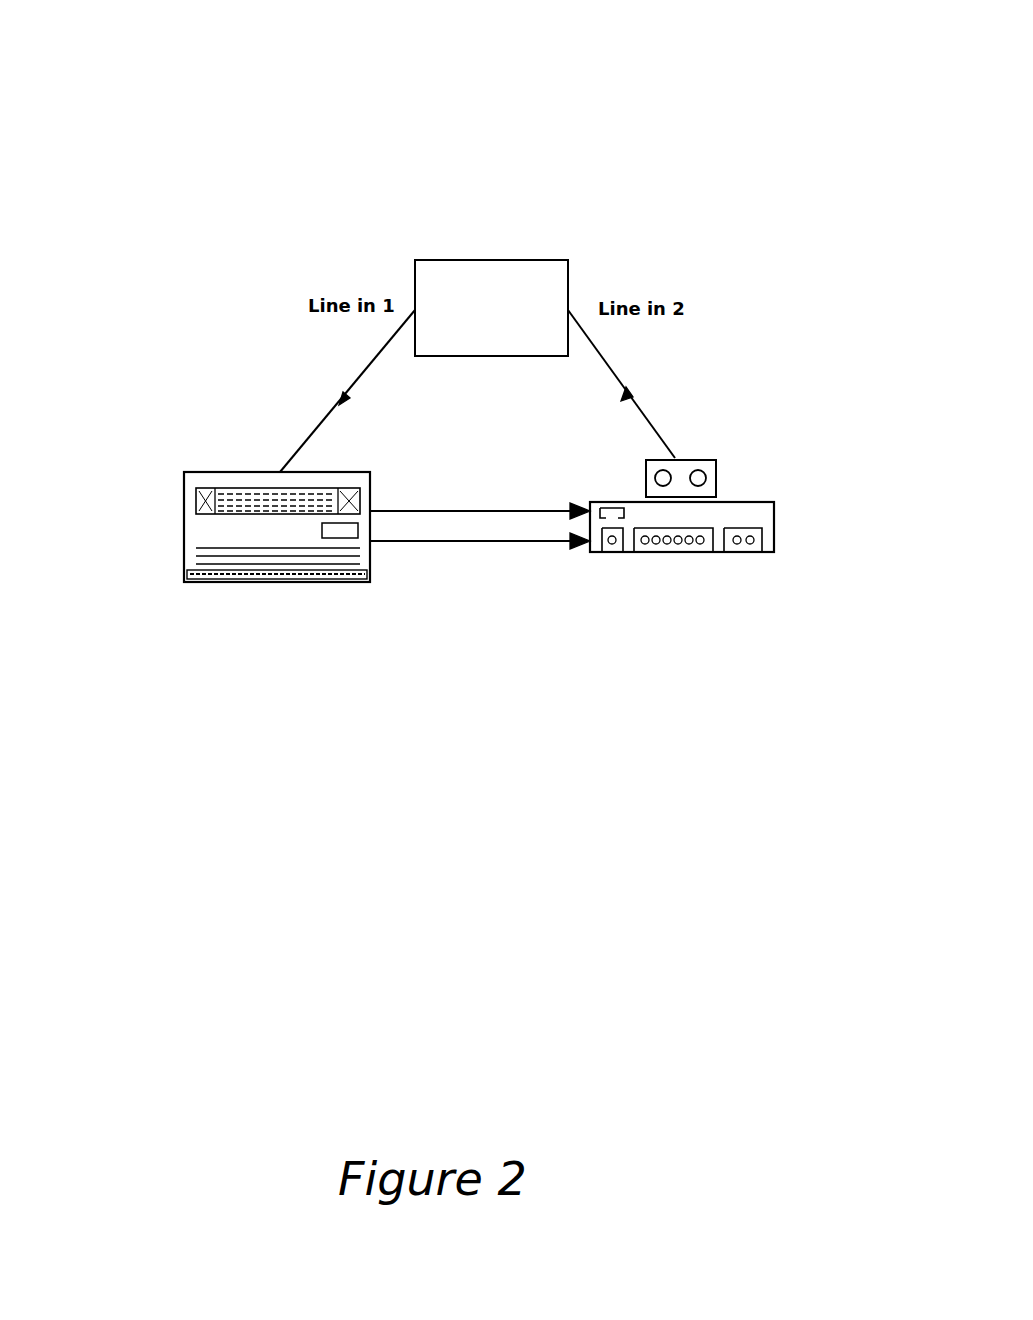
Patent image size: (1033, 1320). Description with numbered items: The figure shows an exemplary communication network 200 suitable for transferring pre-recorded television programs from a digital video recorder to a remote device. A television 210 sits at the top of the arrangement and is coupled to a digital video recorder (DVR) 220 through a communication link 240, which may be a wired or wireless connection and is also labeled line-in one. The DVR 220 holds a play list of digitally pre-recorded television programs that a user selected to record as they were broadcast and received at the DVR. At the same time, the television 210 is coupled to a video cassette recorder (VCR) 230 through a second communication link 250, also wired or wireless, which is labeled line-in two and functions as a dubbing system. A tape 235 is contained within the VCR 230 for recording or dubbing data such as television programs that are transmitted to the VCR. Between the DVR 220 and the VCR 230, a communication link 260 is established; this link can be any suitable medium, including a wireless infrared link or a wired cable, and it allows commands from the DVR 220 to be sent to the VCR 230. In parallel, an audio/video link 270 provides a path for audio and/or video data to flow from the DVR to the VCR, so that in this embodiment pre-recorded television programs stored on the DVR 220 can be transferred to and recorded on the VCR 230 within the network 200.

The communication network 200 is at (884, 66).
The television 210 is at (537, 272).
The digital video recorder 220 is at (193, 523).
The video cassette recorder 230 is at (782, 518).
The tape 235 is at (730, 468).
The communication link 240 is at (367, 382).
The communication link 250 is at (614, 384).
The communication link 260 is at (545, 572).
The audio/video link 270 is at (393, 478).